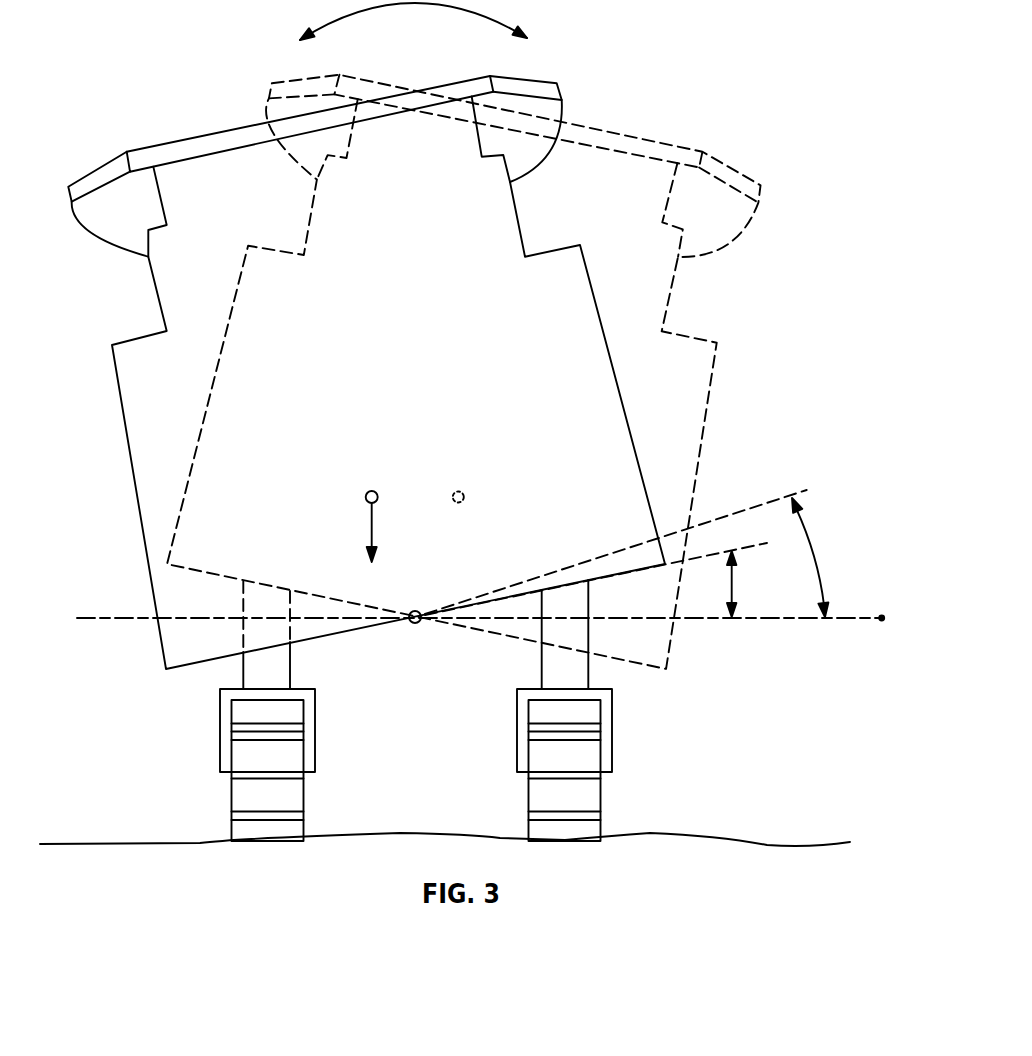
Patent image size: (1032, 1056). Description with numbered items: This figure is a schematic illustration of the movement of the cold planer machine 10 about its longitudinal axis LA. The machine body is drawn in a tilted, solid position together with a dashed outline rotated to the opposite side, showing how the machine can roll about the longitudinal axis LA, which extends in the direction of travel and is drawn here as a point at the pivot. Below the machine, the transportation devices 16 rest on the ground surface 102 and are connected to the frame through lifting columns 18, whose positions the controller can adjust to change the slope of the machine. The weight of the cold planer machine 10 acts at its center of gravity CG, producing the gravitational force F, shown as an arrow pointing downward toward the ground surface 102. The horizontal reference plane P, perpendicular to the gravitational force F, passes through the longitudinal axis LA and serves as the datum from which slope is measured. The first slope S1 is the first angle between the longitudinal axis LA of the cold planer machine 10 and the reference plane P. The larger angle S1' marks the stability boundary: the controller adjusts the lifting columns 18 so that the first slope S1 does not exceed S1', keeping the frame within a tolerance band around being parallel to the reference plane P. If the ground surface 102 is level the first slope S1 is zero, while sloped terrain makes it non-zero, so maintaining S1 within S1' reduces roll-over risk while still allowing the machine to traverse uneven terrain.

The cold planer machine 10 is at (680, 68).
The transportation devices 16 is at (303, 792).
The lifting columns 18 is at (290, 676).
The ground surface 102 is at (820, 843).
The center of gravity CG is at (408, 478).
The gravitational force F is at (372, 532).
The longitudinal axis LA is at (415, 611).
The horizontal reference plane P is at (857, 622).
The first slope S1 is at (612, 580).
The stability angle boundary for first slope S1' is at (657, 553).